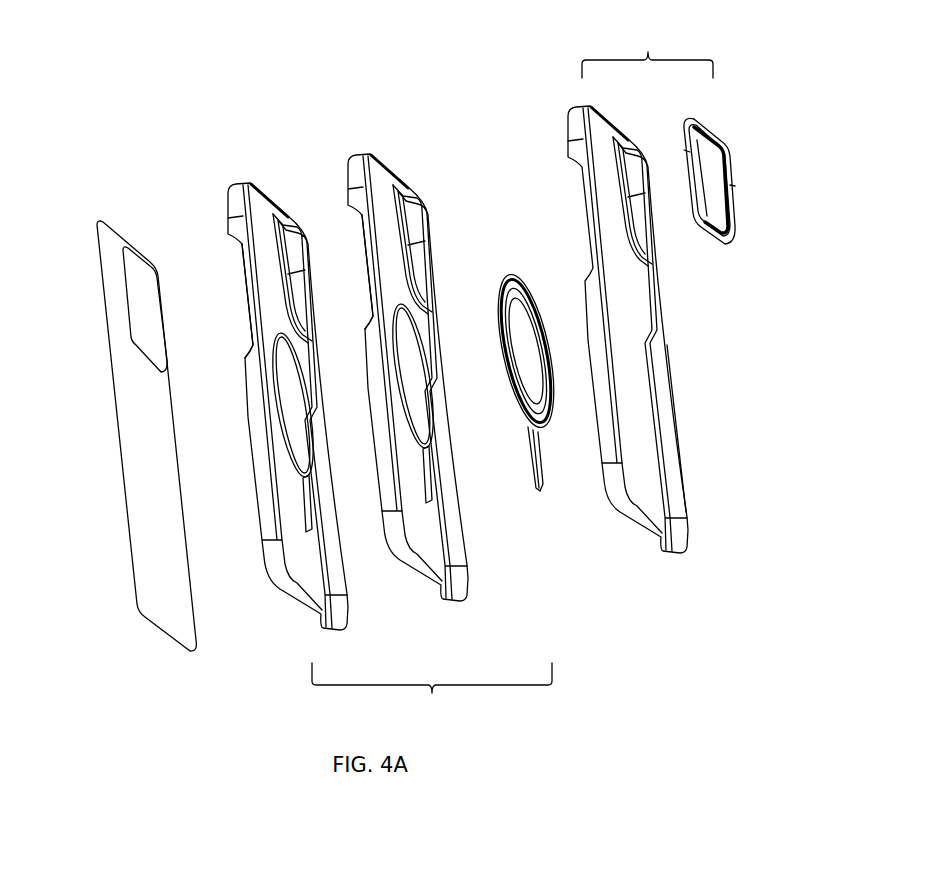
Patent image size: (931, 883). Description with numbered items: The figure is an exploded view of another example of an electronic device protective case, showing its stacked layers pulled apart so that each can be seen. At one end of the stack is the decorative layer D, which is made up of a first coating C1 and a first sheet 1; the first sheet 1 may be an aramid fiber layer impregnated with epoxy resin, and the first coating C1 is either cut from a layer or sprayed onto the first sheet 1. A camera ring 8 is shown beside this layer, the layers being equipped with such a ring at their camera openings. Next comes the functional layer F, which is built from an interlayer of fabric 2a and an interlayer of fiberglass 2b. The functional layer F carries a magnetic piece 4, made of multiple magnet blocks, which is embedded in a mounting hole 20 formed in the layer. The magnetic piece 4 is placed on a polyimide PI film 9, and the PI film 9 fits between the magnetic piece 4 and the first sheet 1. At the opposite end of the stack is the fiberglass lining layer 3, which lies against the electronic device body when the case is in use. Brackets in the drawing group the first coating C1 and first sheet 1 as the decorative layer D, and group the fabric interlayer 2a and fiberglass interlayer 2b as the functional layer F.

The first sheet 1 is at (560, 105).
The interlayer of fabric 2a is at (357, 154).
The interlayer of fiberglass 2b is at (227, 203).
The fiberglass lining layer 3 is at (95, 232).
The magnetic piece 4 is at (497, 307).
The PI film 9 is at (510, 274).
The camera ring 8 is at (728, 240).
The mounting hole 20 is at (253, 343).
The first coating C1 is at (670, 348).
The decorative layer D is at (647, 51).
The functional layer F is at (432, 694).